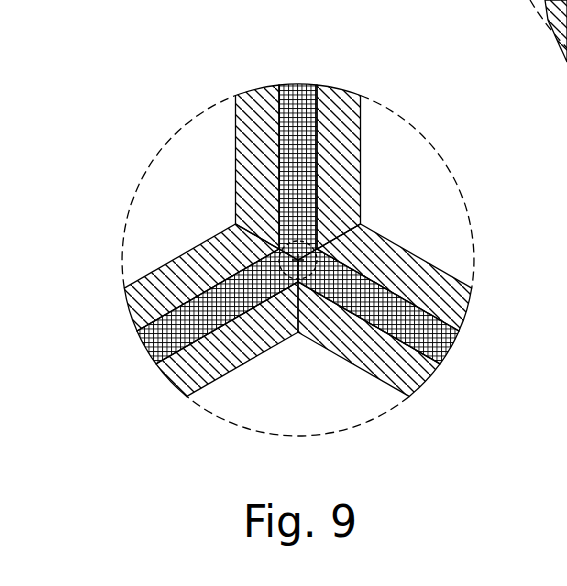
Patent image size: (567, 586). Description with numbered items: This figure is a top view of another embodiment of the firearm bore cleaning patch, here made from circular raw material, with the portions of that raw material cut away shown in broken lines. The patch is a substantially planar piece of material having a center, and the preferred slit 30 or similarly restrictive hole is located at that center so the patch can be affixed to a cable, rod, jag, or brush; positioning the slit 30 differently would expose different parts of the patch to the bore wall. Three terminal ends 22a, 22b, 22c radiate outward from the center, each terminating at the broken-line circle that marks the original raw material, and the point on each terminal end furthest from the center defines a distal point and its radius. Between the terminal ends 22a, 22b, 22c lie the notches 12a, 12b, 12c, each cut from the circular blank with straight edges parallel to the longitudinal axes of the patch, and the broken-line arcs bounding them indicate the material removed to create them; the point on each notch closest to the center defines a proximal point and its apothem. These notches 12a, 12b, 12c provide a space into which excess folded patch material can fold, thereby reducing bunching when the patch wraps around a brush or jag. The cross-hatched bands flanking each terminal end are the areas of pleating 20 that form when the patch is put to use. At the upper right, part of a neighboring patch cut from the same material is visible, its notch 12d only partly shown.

The areas of pleating 20 is at (248, 94).
The terminal end 22a is at (292, 87).
The terminal end 22b is at (455, 347).
The terminal end 22c is at (150, 358).
The slit 30 is at (279, 258).
The notch 12a is at (392, 212).
The notch 12b is at (310, 368).
The notch 12c is at (193, 198).
The adjacent arm segment 12d is at (530, 0).